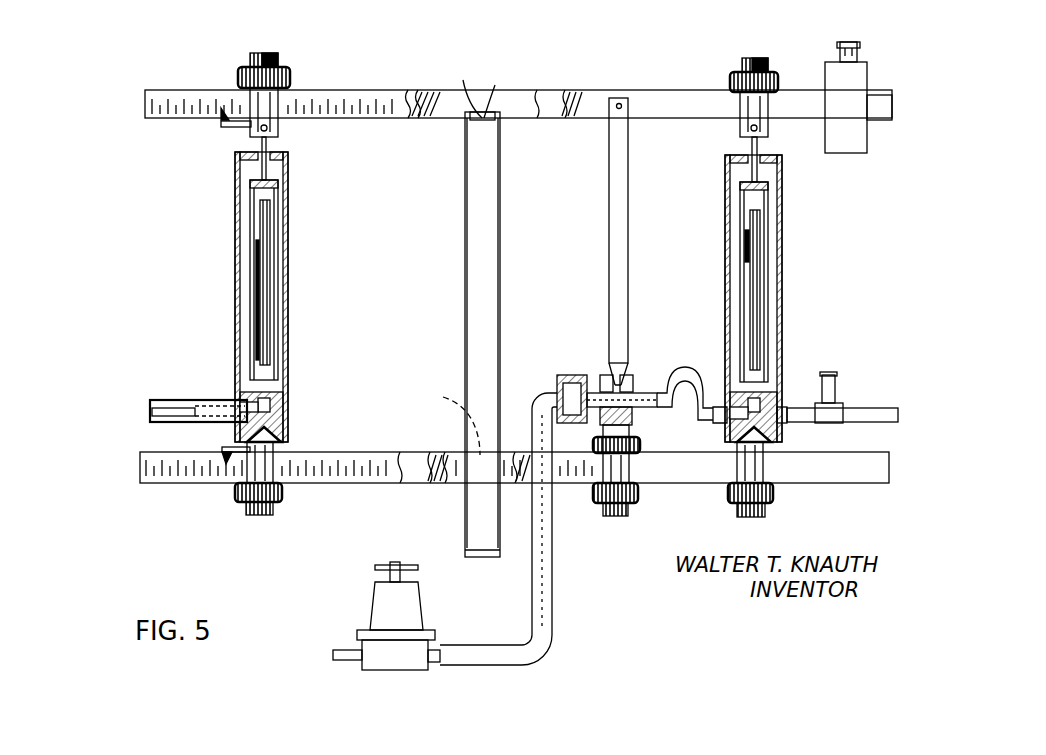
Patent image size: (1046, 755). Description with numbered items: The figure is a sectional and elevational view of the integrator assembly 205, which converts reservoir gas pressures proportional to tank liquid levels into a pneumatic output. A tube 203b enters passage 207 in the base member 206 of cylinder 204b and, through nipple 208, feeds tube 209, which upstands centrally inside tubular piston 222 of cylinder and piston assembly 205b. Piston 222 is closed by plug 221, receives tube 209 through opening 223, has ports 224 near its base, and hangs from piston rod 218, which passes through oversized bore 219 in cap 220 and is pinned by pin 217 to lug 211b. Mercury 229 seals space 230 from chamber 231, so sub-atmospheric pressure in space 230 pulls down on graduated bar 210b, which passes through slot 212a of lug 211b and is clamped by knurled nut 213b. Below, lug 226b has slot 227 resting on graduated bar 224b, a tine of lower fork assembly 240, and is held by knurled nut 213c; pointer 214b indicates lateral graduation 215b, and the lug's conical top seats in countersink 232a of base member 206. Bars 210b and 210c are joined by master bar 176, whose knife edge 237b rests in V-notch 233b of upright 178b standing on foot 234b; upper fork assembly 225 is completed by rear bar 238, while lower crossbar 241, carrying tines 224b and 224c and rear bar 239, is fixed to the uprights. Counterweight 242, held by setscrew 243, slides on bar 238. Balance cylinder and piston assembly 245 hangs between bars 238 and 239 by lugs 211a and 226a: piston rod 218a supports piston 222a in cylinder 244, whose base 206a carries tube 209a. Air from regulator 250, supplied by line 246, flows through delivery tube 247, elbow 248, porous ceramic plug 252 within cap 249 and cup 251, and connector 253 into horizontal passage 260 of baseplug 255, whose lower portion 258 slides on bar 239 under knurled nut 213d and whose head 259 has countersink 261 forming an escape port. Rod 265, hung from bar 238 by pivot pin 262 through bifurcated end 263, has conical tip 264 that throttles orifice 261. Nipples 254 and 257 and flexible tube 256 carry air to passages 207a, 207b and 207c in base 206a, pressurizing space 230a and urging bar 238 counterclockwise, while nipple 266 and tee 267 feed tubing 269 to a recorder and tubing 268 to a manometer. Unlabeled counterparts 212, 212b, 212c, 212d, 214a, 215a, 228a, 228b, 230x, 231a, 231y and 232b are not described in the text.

The master bar 176 is at (480, 108).
The upright 178b is at (467, 170).
The tube 203b is at (150, 402).
The cylinder 204b is at (245, 278).
The integrator assembly 205 is at (596, 90).
The cylinder and piston assembly 205b is at (233, 250).
The base member 206 is at (284, 404).
The baseplug 206a is at (735, 400).
The passage 207 is at (270, 412).
The lateral passage 207a is at (740, 424).
The vertical passage 207b is at (783, 400).
The lateral passage 207c is at (790, 408).
The nipple 208 is at (234, 400).
The tube 209 is at (270, 382).
The tube 209a is at (758, 250).
The graduated bar 210b is at (145, 104).
The graduated bar 210c is at (528, 116).
The lug 211a is at (757, 58).
The lug 211b is at (272, 54).
The clamp bolt 212 is at (770, 98).
The slot 212a is at (280, 96).
The clamp bolt 212b is at (277, 466).
The clamp bolt 212c is at (630, 470).
The clamp bolt 212d is at (767, 470).
The knurled nut 213b is at (247, 72).
The knurled nut 213c is at (241, 494).
The knurled nut 213d is at (640, 447).
The index plate 214a is at (240, 126).
The pointer 214b is at (235, 448).
The pointer 215a is at (225, 108).
The lateral graduation 215b is at (228, 462).
The pin 217 is at (257, 137).
The piston rod 218 is at (268, 152).
The piston rod 218a is at (750, 146).
The oversized bore 219 is at (273, 172).
The cap 220 is at (247, 154).
The closure cap 221 is at (277, 198).
The tubular piston 222 is at (268, 234).
The piston 222a is at (768, 230).
The opening 223 is at (268, 376).
The ports 224 is at (284, 360).
The graduated bar 224b is at (140, 466).
The graduated bar 224c is at (456, 455).
The upper fork assembly 225 is at (128, 80).
The lug 226a is at (770, 510).
The lug 226b is at (263, 518).
The slot 227 is at (243, 466).
The bolt shank 228a is at (278, 452).
The bolt shank 228b is at (766, 455).
The liquid-sealing material 229 is at (240, 370).
The space 230 is at (262, 210).
The space 230a is at (755, 205).
The bore section 230x is at (762, 270).
The chamber 231 is at (270, 264).
The plunger rod 231a is at (740, 215).
The plunger rod section 231y is at (745, 268).
The countersink 232a is at (282, 432).
The valve seat 232b is at (775, 432).
The V-notch 233b is at (478, 116).
The foot 234b is at (465, 553).
The knife edge 237b is at (488, 105).
The rear bar 238 is at (690, 90).
The rear bar 239 is at (852, 483).
The lower fork assembly 240 is at (135, 440).
The master bar 241 is at (439, 419).
The counterweight 242 is at (868, 86).
The setscrew 243 is at (856, 44).
The cylinder 244 is at (725, 182).
The cylinder and piston assembly 245 is at (785, 218).
The line 246 is at (342, 652).
The delivery tube 247 is at (547, 652).
The elbow 248 is at (555, 410).
The cap 249 is at (565, 378).
The air pressure regulator 250 is at (410, 663).
The cup 251 is at (590, 405).
The porous ceramic plug 252 is at (572, 420).
The connector 253 is at (598, 393).
The connector nipple 254 is at (635, 410).
The baseplug 255 is at (612, 518).
The flexible tube 256 is at (665, 400).
The connector nipple 257 is at (696, 390).
The lower portion 258 is at (602, 478).
The head 259 is at (624, 380).
The horizontal passage 260 is at (628, 395).
The countersink 261 is at (607, 390).
The pivot pin 262 is at (622, 105).
The bifurcated upper end 263 is at (610, 120).
The conical tip 264 is at (615, 382).
The rod 265 is at (608, 215).
The connection nipple 266 is at (798, 406).
The tee 267 is at (843, 405).
The tubing 268 is at (836, 380).
The tubing 269 is at (860, 422).